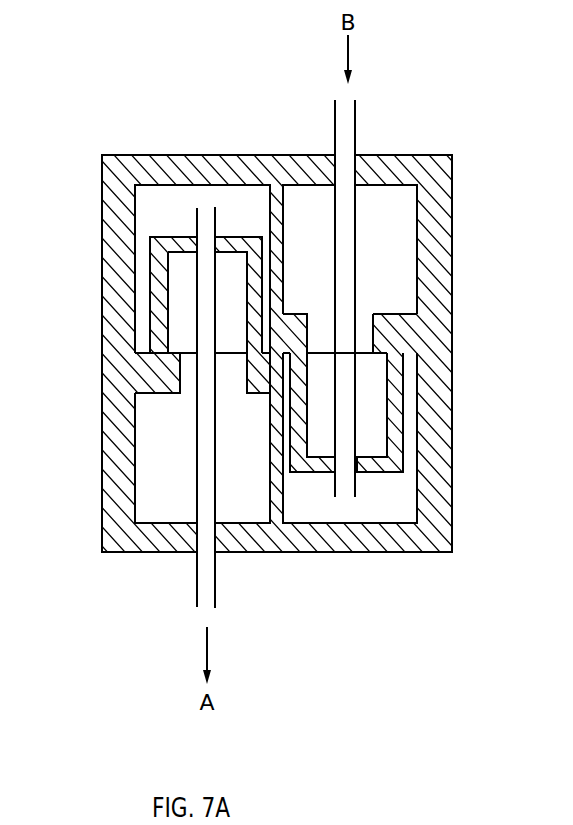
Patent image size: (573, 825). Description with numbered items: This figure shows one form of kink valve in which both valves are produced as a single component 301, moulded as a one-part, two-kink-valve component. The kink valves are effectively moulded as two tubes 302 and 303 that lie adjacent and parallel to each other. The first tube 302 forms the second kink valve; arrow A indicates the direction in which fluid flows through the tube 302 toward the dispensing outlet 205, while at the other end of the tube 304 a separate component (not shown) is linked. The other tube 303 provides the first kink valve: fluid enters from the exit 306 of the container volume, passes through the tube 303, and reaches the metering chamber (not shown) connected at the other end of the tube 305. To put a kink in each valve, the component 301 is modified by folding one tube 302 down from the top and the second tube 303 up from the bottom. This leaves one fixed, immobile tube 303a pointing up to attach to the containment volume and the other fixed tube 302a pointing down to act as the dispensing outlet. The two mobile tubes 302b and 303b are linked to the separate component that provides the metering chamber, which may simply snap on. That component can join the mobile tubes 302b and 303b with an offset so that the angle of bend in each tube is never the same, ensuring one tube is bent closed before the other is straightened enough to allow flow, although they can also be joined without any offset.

The single component 301 is at (450, 552).
The first tube 302 is at (286, 350).
The fixed tube 302a is at (197, 461).
The mobile tube 302b is at (197, 288).
The other tube 303 is at (286, 350).
The fixed tube 303a is at (355, 266).
The mobile tube 303b is at (350, 425).
The other end of the tube 304 is at (217, 208).
The dispensing outlet 205 is at (197, 597).
The other end of the tube 305 is at (357, 497).
The exit 306 is at (357, 118).